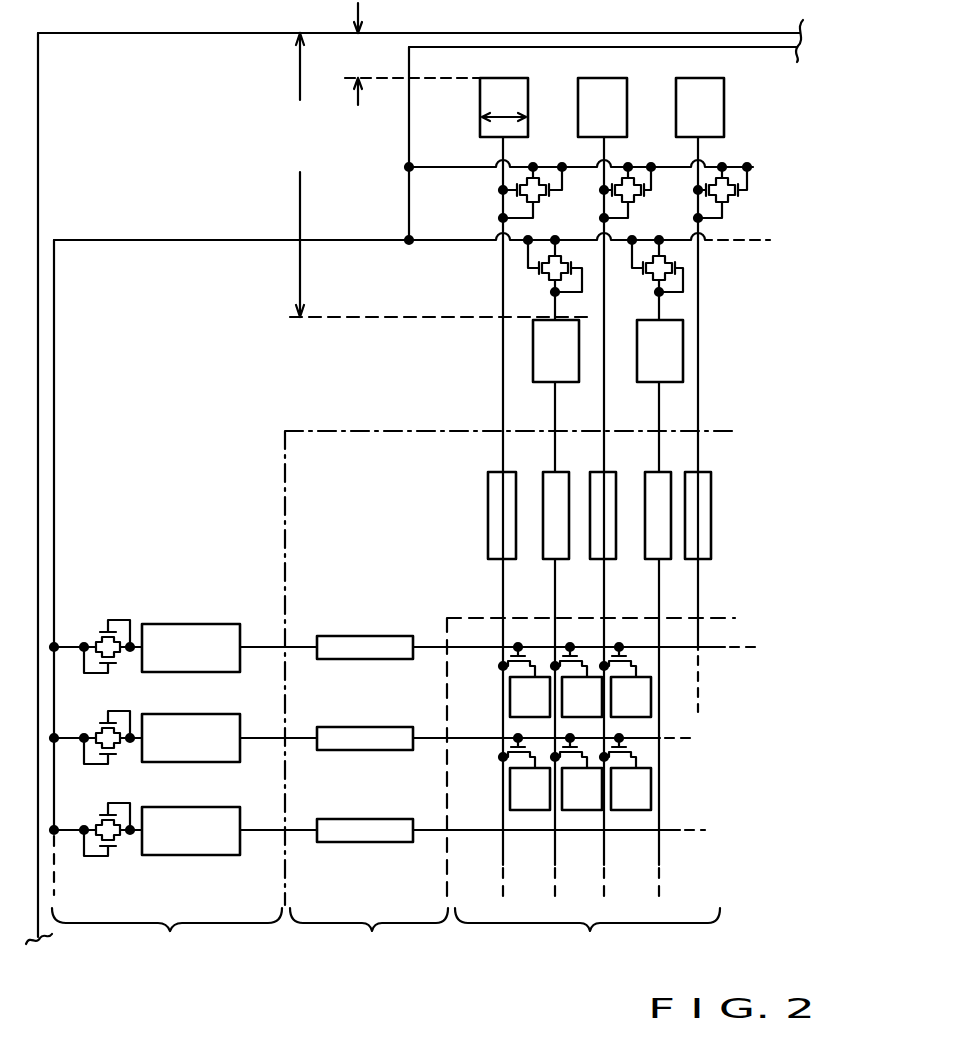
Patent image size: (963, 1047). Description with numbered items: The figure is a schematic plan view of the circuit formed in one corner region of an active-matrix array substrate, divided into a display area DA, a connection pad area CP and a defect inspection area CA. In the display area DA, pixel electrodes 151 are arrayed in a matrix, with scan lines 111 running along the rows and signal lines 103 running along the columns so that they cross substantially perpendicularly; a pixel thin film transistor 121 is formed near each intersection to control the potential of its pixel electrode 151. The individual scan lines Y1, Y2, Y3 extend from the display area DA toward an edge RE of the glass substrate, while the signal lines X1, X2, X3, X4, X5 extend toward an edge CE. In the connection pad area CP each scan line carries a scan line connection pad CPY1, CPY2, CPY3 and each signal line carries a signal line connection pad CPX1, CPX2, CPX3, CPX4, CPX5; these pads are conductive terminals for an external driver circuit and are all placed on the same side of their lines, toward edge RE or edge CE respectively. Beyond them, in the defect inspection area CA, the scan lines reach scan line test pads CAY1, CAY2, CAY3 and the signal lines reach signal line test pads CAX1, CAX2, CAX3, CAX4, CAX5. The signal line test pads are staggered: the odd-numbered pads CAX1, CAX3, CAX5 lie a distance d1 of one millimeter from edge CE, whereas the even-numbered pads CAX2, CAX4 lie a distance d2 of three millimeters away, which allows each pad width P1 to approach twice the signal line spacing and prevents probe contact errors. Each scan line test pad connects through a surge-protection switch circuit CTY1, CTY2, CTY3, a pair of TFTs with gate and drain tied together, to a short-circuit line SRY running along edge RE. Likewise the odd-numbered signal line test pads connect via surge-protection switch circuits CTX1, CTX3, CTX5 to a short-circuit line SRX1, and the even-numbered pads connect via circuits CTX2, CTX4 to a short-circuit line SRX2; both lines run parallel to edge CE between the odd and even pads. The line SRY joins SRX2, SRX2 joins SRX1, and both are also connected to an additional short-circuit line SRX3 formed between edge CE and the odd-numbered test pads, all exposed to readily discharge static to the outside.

The edge of the glass substrate CE is at (515, 33).
The edge of the glass substrate RE is at (37, 192).
The short-circuit line SRX1 is at (753, 167).
The short-circuit line SRX2 is at (755, 242).
The additional short-circuit line SRX3 is at (747, 50).
The signal line test pad CAX1 is at (480, 100).
The signal line test pad CAX2 is at (545, 357).
The signal line test pad CAX3 is at (592, 103).
The signal line test pad CAX4 is at (672, 357).
The signal line test pad CAX5 is at (683, 103).
The width of signal line test pad P1 is at (504, 102).
The surge-protection switch circuit CTX1 is at (510, 203).
The surge-protection switch circuit CTX2 is at (525, 278).
The surge-protection switch circuit CTX3 is at (643, 200).
The surge-protection switch circuit CTX4 is at (677, 294).
The surge-protection switch circuit CTX5 is at (748, 192).
The signal line connection pad CPX1 is at (500, 488).
The signal line connection pad CPX2 is at (552, 487).
The signal line connection pad CPX3 is at (599, 482).
The signal line connection pad CPX4 is at (657, 490).
The signal line connection pad CPX5 is at (700, 488).
The short-circuit line SRY is at (56, 530).
The surge-protection switch circuit CTY1 is at (107, 618).
The surge-protection switch circuit CTY2 is at (97, 724).
The surge-protection switch circuit CTY3 is at (97, 815).
The scan line test pad CAY1 is at (197, 632).
The scan line test pad CAY2 is at (192, 724).
The scan line test pad CAY3 is at (192, 815).
The scan line connection pad CPY1 is at (338, 650).
The scan line connection pad CPY2 is at (345, 740).
The scan line connection pad CPY3 is at (345, 832).
The signal line X1 is at (519, 519).
The signal line X2 is at (571, 642).
The signal line X3 is at (621, 519).
The signal line X4 is at (675, 642).
The signal line X5 is at (714, 393).
The scan line Y1 is at (404, 631).
The scan line Y2 is at (374, 722).
The scan line Y3 is at (379, 812).
The scan lines 111 is at (738, 647).
The signal lines 103 is at (700, 680).
The pixel thin film transistor 121 is at (650, 760).
The pixel electrode 151 is at (642, 806).
The distance d1 is at (411, 54).
The distance d2 is at (439, 175).
The defect inspection area CA is at (167, 936).
The connection pad area CP is at (369, 936).
The display area DA is at (587, 936).